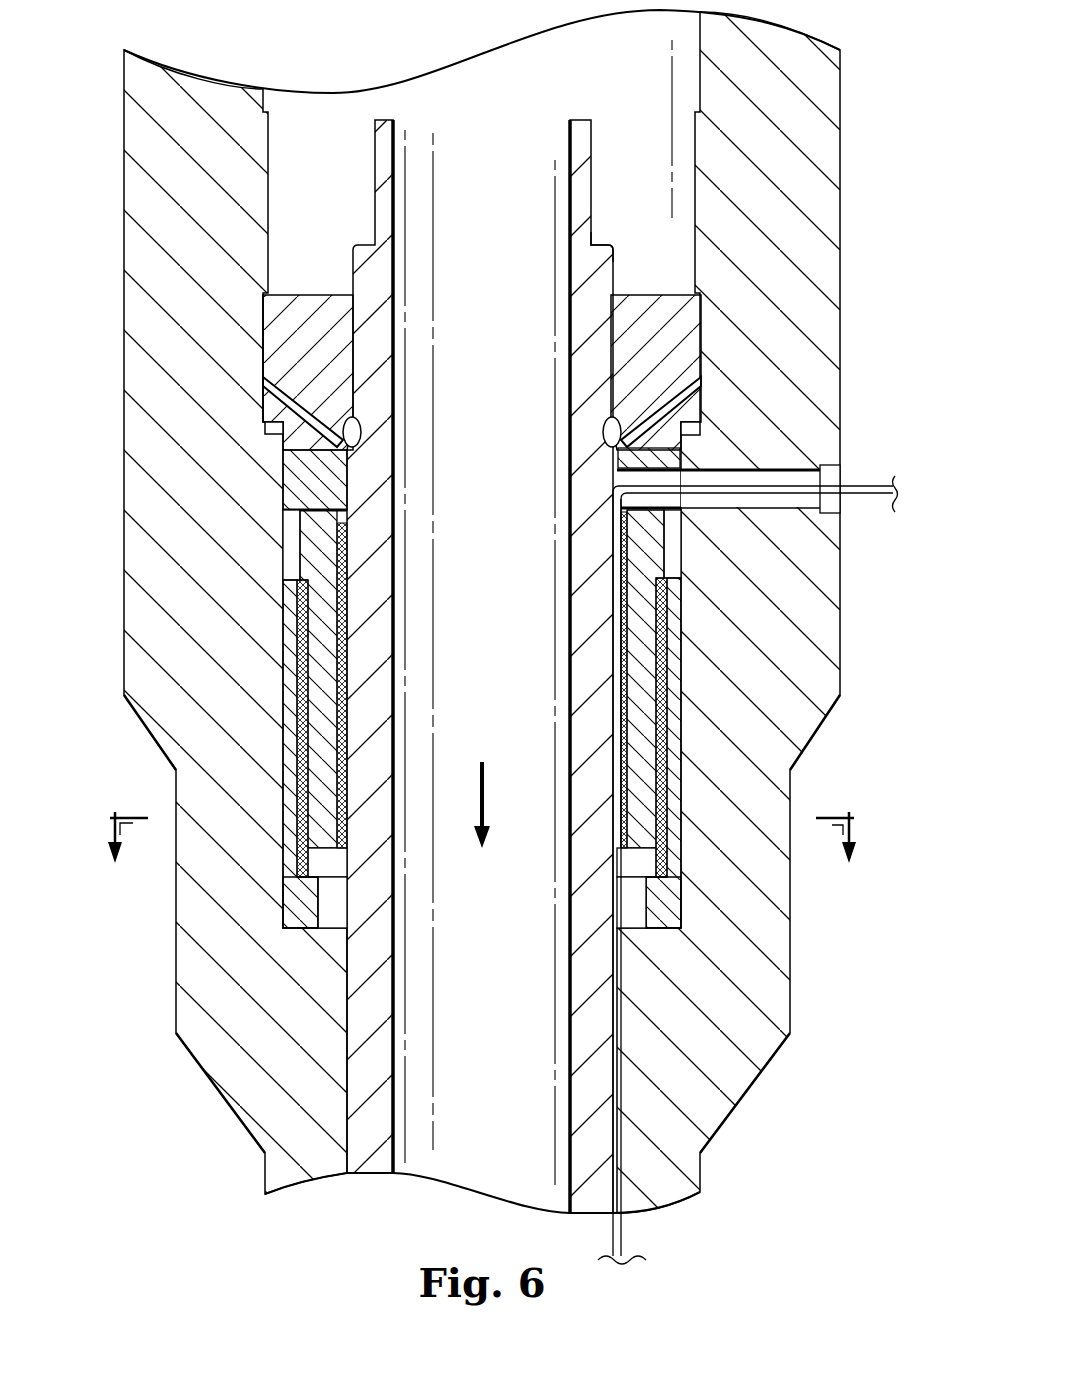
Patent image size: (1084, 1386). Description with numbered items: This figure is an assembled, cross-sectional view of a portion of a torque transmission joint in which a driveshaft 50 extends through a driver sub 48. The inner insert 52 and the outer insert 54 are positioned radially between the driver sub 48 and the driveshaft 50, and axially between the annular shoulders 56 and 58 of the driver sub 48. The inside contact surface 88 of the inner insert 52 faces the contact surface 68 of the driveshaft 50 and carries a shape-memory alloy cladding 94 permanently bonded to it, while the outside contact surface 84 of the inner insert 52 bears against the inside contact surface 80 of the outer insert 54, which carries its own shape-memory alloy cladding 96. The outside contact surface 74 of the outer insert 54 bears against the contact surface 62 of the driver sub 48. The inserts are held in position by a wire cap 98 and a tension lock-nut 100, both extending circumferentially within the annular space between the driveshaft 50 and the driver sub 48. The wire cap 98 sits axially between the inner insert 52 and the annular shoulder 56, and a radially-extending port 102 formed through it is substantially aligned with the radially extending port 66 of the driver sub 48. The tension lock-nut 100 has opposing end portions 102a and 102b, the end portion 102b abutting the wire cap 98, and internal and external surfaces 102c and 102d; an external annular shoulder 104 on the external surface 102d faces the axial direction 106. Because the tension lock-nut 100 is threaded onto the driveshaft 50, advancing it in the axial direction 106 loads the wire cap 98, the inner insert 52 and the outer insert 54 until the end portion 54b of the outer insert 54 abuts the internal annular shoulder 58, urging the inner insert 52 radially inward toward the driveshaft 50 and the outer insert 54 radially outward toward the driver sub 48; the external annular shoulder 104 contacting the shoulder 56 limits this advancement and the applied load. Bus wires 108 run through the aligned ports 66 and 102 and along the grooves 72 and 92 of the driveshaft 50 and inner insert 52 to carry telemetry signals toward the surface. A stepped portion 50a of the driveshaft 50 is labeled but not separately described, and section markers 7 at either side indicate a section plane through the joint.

The driver sub 48 is at (832, 152).
The driveshaft 50 is at (590, 182).
The shoulder of tubular member 50a is at (615, 267).
The inner insert 52 is at (657, 537).
The outer insert 54 is at (673, 877).
The end portion of outer insert 54b is at (673, 902).
The internal annular shoulder 56 is at (693, 408).
The internal annular shoulder 58 is at (653, 917).
The contact surface of driver sub 62 is at (290, 895).
The radially extending port 66 is at (760, 505).
The contact surface of driveshaft 68 is at (342, 720).
The groove of driveshaft 72 is at (627, 727).
The outside contact surface of outer insert 74 is at (283, 838).
The inside contact surface of outer insert 80 is at (300, 612).
The outside contact surface of inner insert 84 is at (305, 672).
The inside contact surface of inner insert 88 is at (347, 597).
The groove of inner insert 92 is at (613, 643).
The shape-memory alloy cladding 94 is at (620, 588).
The shape-memory alloy cladding 96 is at (667, 637).
The wire cap 98 is at (672, 460).
The tension lock-nut 100 is at (648, 302).
The radially-extending port 102 is at (617, 478).
The end portion of tension lock-nut 102a is at (342, 312).
The end portion of tension lock-nut 102b is at (343, 408).
The internal surface of tension lock-nut 102c is at (353, 355).
The external surface of tension lock-nut 102d is at (265, 333).
The external annular shoulder 104 is at (267, 438).
The axial direction 106 is at (487, 790).
The bus wires 108 is at (862, 485).
The section line 7 is at (481, 855).